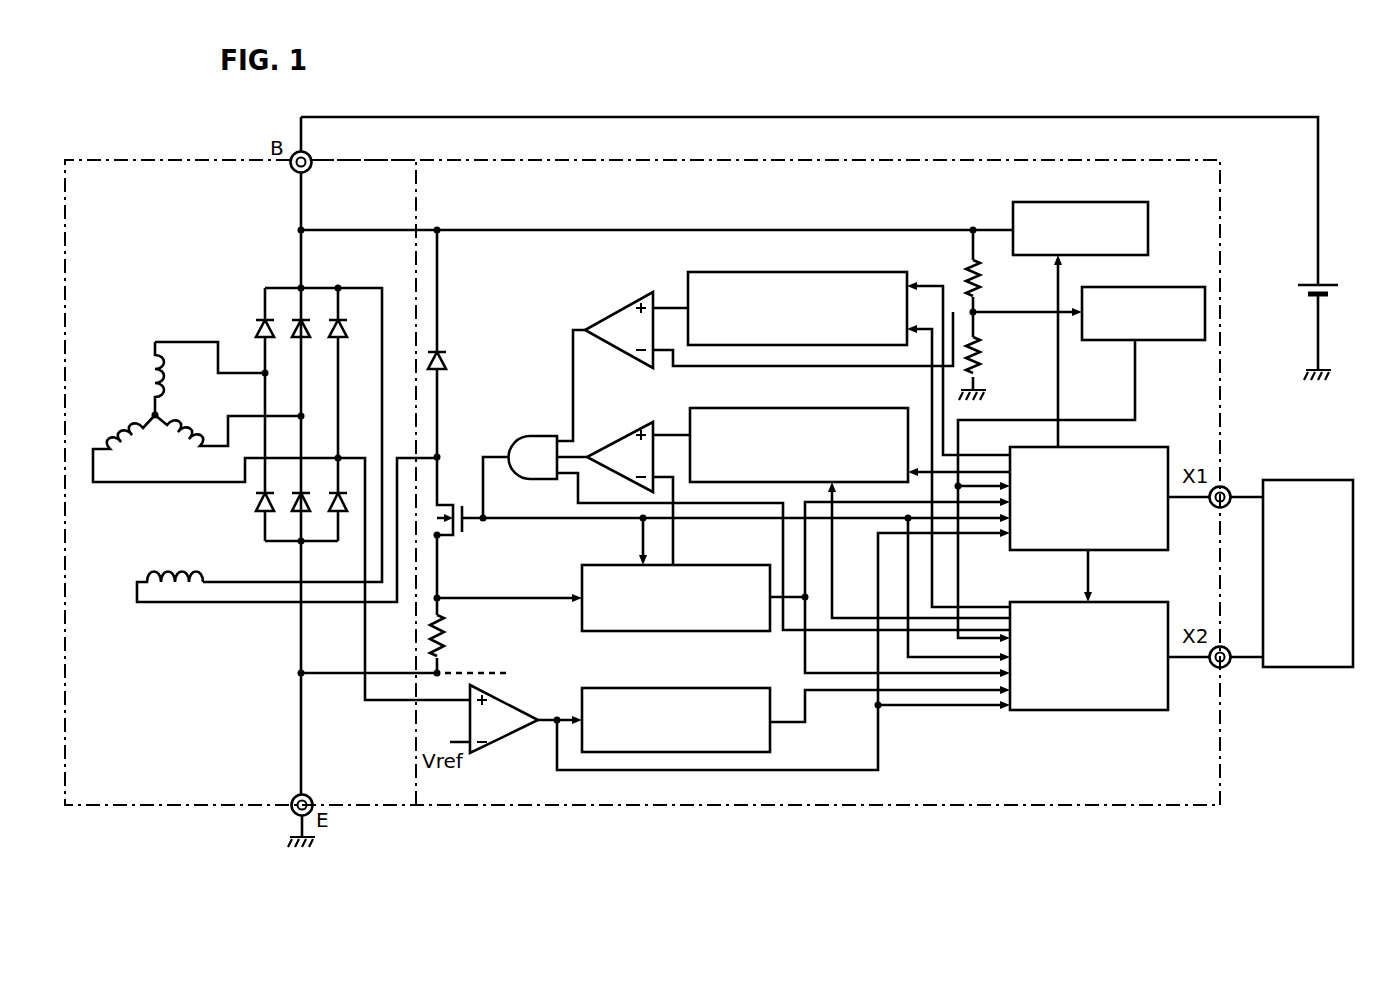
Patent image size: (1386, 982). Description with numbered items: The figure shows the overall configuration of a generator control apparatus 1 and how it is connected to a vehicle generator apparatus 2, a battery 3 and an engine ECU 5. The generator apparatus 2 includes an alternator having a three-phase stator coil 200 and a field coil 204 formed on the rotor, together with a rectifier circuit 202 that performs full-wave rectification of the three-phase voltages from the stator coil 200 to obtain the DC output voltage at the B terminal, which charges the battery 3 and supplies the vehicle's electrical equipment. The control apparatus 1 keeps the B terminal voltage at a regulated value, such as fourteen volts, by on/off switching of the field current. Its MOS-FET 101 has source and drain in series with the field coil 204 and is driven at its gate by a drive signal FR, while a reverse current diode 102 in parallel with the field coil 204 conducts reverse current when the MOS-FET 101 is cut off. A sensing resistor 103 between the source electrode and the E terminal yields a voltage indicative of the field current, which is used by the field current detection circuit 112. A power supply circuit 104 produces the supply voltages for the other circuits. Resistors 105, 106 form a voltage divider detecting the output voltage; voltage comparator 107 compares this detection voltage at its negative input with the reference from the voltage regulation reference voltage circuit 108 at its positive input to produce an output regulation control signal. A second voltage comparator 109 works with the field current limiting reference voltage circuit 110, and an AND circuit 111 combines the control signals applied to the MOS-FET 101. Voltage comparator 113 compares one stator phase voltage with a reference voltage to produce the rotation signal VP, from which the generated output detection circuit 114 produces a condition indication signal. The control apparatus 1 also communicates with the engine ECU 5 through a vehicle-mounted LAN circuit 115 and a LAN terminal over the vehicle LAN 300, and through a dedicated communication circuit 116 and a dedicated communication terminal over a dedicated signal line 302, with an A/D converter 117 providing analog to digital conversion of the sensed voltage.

The generator control apparatus 1 is at (1200, 158).
The vehicle generator apparatus 2 is at (166, 160).
The battery 3 is at (1336, 282).
The engine ECU 5 is at (1325, 480).
The MOS-FET 101 is at (456, 503).
The reverse current diode 102 is at (438, 358).
The sensing resistor 103 is at (443, 636).
The power supply circuit 104 is at (1135, 188).
The resistor 105 is at (981, 272).
The resistor 106 is at (981, 350).
The voltage comparator 107 is at (630, 308).
The voltage regulation reference voltage circuit 108 is at (893, 255).
The voltage comparator 109 is at (638, 433).
The field current limiting reference voltage circuit 110 is at (893, 392).
The AND circuit 111 is at (538, 437).
The field current detection circuit 112 is at (602, 566).
The voltage comparator 113 is at (488, 748).
The generated output detection circuit 114 is at (755, 688).
The vehicle-mounted LAN circuit 115 is at (1175, 430).
The dedicated communication circuit 116 is at (1163, 585).
The A/D converter 117 is at (1182, 270).
The stator coil 200 is at (152, 410).
The rectifier circuit 202 is at (280, 288).
The field coil 204 is at (167, 572).
The vehicle LAN 300 is at (1245, 497).
The dedicated signal line 302 is at (1246, 660).